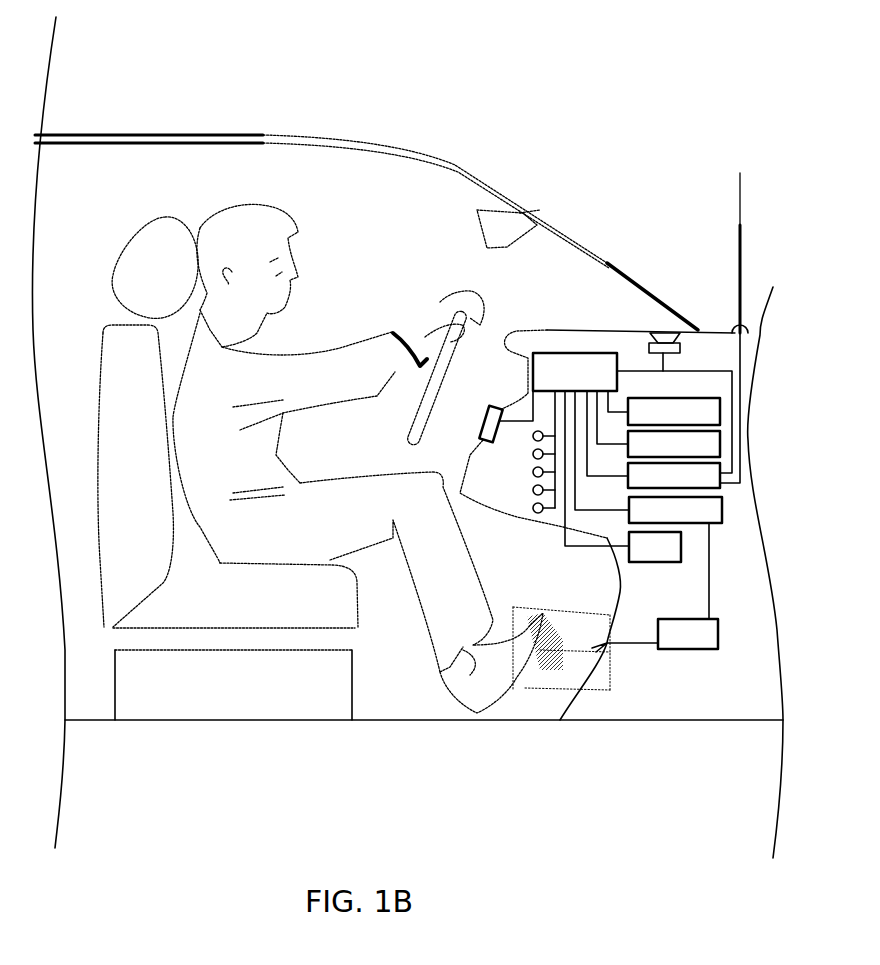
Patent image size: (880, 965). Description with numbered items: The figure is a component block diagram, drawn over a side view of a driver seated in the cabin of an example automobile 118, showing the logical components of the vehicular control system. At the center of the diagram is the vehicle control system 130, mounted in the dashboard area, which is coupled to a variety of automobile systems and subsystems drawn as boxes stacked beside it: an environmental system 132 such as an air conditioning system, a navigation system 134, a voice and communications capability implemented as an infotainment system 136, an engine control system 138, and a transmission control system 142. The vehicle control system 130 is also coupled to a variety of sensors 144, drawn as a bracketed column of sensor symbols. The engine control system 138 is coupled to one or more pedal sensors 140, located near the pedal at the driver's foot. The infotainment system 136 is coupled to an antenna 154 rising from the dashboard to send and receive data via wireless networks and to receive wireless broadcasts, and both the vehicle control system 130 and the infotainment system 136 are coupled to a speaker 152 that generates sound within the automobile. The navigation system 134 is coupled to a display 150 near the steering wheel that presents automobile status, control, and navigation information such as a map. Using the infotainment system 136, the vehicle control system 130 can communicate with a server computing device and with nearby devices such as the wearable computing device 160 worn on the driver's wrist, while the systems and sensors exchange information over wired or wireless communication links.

The automobile 118 is at (688, 61).
The vehicle control system 130 is at (632, 449).
The environmental system 132 is at (674, 411).
The navigation system 134 is at (674, 444).
The infotainment system 136 is at (684, 410).
The engine control system 138 is at (675, 558).
The pedal sensor 140 is at (655, 635).
The transmission control system 142 is at (655, 547).
The sensors 144 is at (532, 428).
The display 150 is at (483, 427).
The speaker 152 is at (662, 330).
The antenna 154 is at (740, 290).
The wearable computing device 160 is at (402, 332).